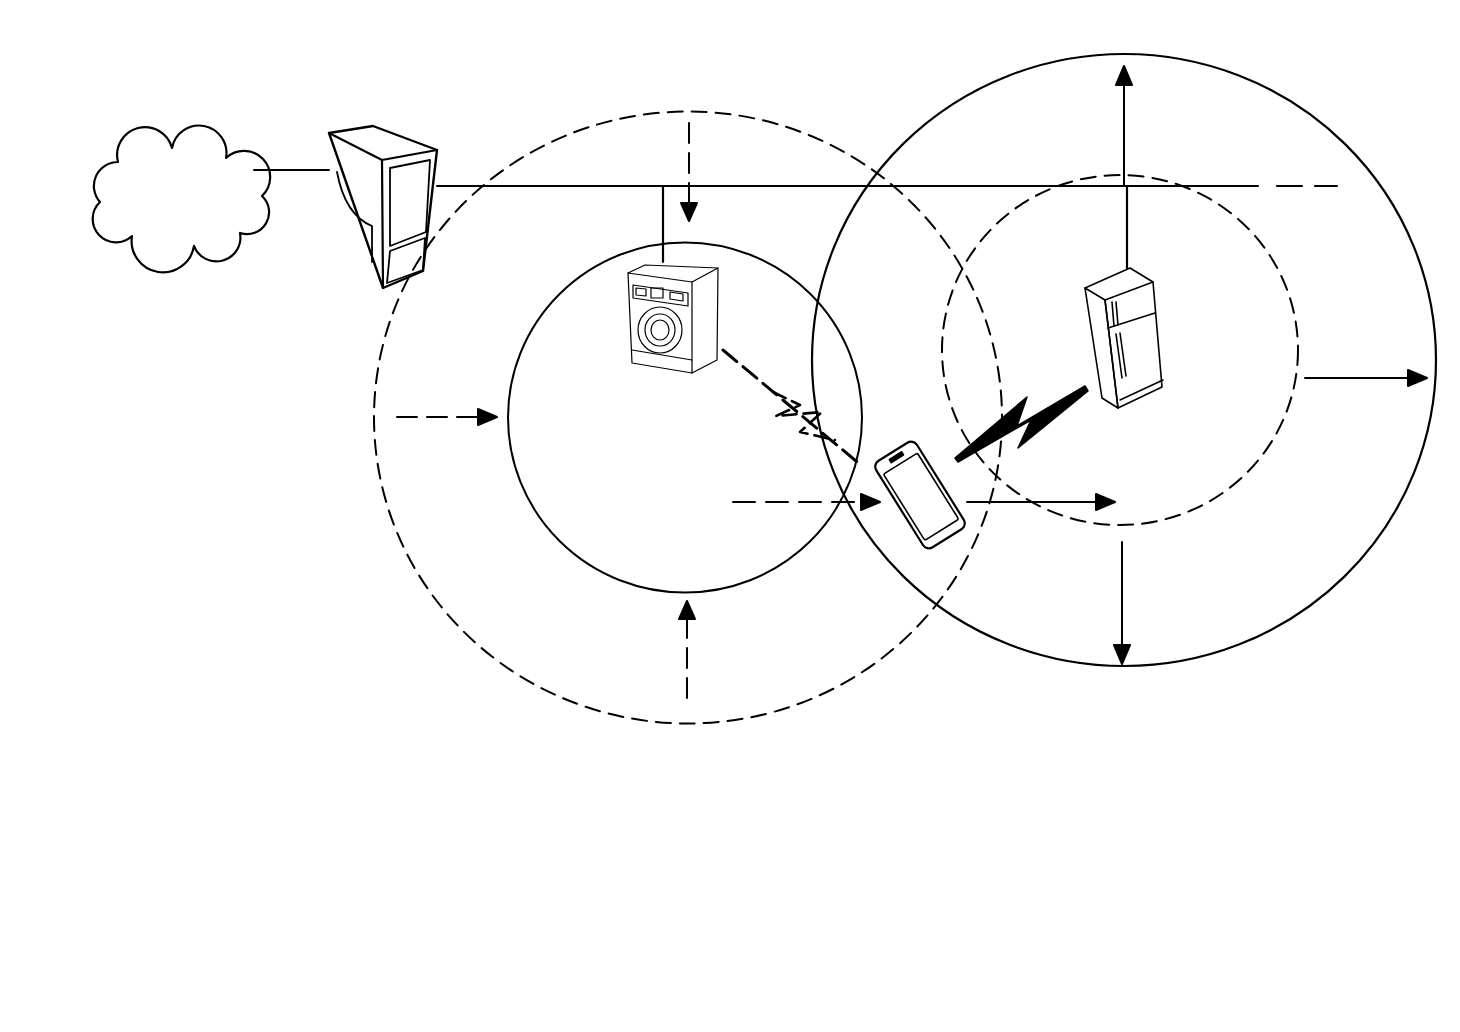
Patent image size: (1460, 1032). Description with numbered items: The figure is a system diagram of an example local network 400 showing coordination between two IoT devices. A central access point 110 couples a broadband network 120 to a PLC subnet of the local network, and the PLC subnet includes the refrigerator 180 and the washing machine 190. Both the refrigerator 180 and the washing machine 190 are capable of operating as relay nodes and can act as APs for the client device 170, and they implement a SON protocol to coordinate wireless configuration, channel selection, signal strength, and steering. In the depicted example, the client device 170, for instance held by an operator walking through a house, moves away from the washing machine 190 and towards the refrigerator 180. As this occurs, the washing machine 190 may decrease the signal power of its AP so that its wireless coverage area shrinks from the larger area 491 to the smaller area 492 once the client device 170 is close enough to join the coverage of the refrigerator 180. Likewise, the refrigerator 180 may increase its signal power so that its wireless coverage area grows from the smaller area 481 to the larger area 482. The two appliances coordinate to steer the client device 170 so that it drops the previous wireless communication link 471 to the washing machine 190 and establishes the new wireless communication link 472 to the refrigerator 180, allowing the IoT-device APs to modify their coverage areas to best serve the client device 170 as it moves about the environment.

The network 400 is at (195, 32).
The broadband network 120 is at (160, 146).
The central access point 110 is at (352, 262).
The wireless coverage area 491 is at (566, 140).
The wireless coverage area 492 is at (586, 272).
The washing machine 190 is at (726, 264).
The wireless communication link 471 is at (776, 370).
The client device 170 is at (903, 438).
The wireless communication link 472 is at (1058, 408).
The refrigerator 180 is at (1160, 290).
The wireless coverage area 481 is at (1230, 213).
The wireless coverage area 482 is at (1276, 90).